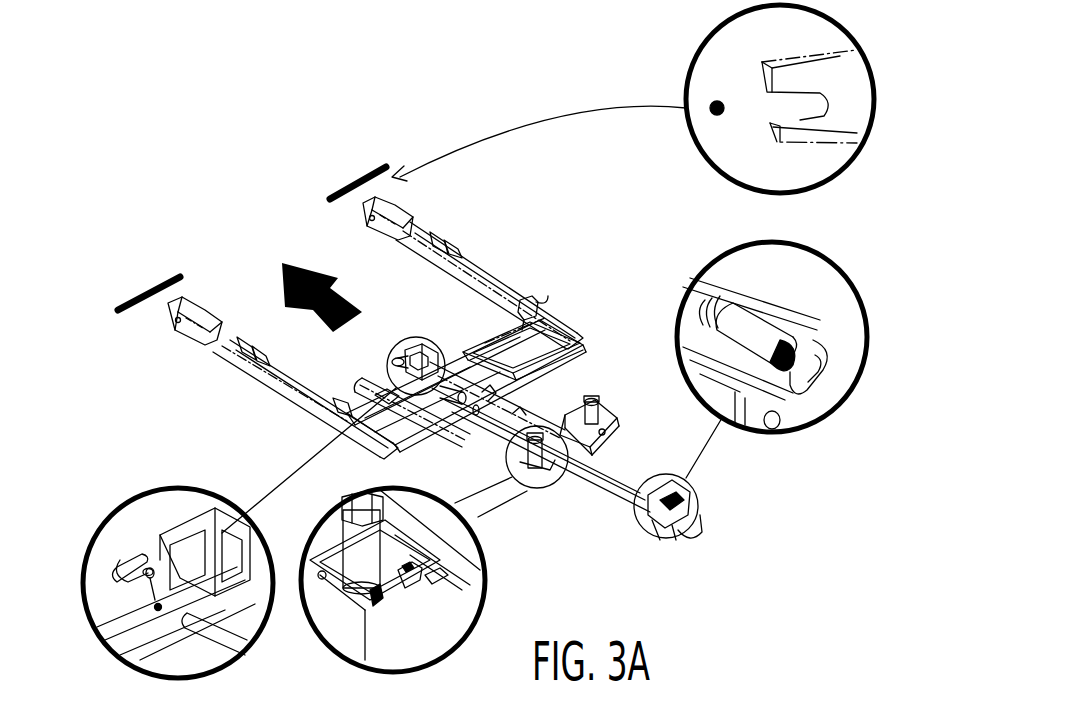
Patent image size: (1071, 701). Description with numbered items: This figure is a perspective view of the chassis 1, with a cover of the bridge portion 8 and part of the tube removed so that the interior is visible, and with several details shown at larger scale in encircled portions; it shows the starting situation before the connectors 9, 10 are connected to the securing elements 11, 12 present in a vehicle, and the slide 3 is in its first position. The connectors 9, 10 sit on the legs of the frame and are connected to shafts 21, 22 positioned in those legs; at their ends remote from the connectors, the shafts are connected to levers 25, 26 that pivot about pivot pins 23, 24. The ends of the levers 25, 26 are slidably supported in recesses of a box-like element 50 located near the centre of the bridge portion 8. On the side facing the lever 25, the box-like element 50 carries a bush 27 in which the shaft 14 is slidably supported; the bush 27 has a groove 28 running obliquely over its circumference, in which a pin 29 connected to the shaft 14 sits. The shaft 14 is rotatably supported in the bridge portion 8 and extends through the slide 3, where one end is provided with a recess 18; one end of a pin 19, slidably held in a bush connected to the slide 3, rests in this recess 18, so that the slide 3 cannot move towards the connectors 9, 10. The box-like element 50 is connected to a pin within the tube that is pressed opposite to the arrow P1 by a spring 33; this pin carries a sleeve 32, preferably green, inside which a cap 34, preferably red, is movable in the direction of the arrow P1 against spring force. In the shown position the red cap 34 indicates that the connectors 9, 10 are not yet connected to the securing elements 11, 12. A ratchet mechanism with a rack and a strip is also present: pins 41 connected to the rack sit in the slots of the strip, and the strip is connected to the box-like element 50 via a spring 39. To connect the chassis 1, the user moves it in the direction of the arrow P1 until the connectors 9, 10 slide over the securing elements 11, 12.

The chassis 1 is at (497, 268).
The slide 3 is at (603, 436).
The bridge portion 8 is at (438, 428).
The connector 9 is at (207, 316).
The connector 10 is at (399, 216).
The securing element 11 is at (152, 285).
The securing element 12 is at (378, 168).
The shaft 14 is at (488, 418).
The recess 18 is at (427, 580).
The pin 19 is at (357, 612).
The shaft 21 is at (270, 367).
The shaft 22 is at (457, 262).
The pivot pin 23 is at (368, 410).
The pivot pin 24 is at (497, 337).
The lever 25 is at (378, 398).
The lever 26 is at (484, 345).
The bush 27 is at (395, 388).
The groove 28 is at (147, 590).
The pin 29 is at (153, 610).
The sleeve 32 is at (753, 327).
The spring 33 is at (715, 263).
The cap 34 is at (817, 347).
The spring 39 is at (460, 338).
The pin 41 is at (549, 414).
The box-like element 50 is at (417, 338).
The arrow P1 is at (350, 302).